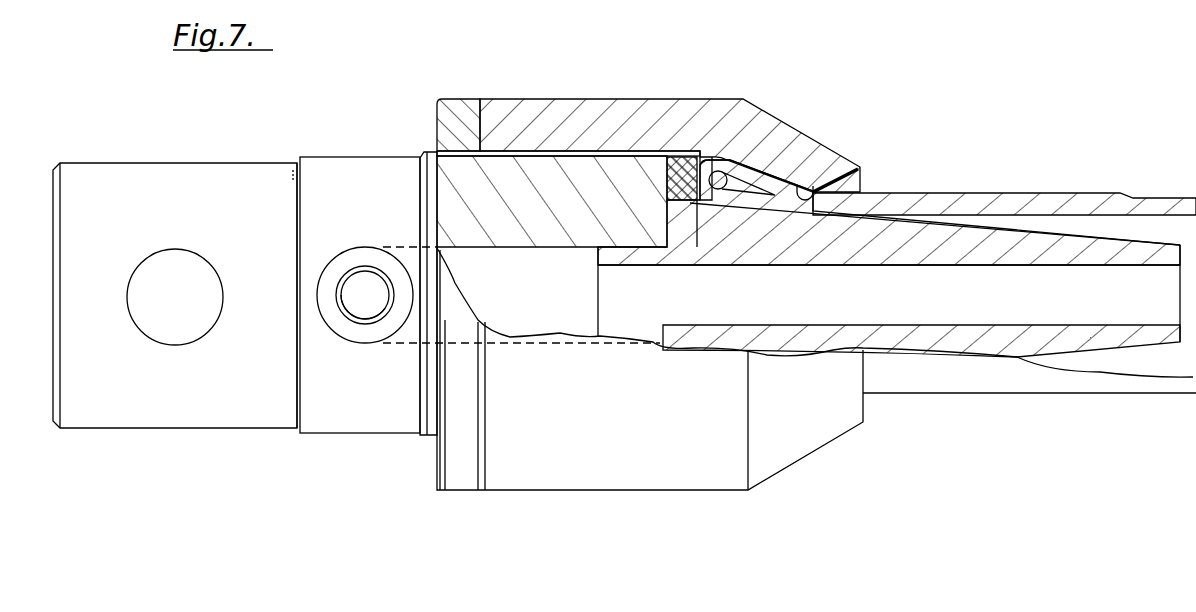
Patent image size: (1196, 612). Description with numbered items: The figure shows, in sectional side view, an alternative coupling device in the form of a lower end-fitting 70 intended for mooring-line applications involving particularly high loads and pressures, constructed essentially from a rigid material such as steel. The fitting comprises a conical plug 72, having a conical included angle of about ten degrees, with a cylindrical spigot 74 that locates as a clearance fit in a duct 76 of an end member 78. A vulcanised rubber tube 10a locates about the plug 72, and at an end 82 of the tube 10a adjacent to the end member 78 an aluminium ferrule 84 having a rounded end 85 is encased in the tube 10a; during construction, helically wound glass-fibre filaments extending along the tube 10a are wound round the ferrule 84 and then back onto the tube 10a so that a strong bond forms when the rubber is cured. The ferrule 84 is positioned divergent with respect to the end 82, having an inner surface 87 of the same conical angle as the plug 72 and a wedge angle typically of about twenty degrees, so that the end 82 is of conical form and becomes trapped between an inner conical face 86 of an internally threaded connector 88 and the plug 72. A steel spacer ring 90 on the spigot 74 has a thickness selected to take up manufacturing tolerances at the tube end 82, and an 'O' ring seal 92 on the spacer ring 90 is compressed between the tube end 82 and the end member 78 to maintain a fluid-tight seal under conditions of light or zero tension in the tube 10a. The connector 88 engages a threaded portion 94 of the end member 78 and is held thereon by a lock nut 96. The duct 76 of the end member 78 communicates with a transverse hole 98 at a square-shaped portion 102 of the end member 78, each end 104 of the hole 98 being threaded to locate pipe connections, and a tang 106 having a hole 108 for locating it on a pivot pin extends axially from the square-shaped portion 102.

The vulcanised rubber tube 10a is at (968, 200).
The lower end-fitting 70 is at (866, 146).
The conical plug 72 is at (1062, 238).
The cylindrical spigot 74 is at (633, 262).
The duct 76 is at (540, 311).
The end member 78 is at (415, 143).
The end of the tube 82 is at (708, 160).
The aluminium ferrule 84 is at (765, 190).
The rounded end 85 is at (727, 175).
The inner conical face 86 is at (810, 186).
The inner surface 87 is at (740, 192).
The internally threaded connector 88 is at (612, 100).
The steel spacer ring 90 is at (677, 233).
The 'O' ring seal 92 is at (676, 157).
The threaded portion 94 is at (535, 158).
The lock nut 96 is at (463, 100).
The transverse hole 98 is at (382, 309).
The square-shaped portion 102 is at (320, 160).
The end of the hole 104 is at (362, 315).
The tang 106 is at (186, 176).
The hole 108 is at (198, 311).